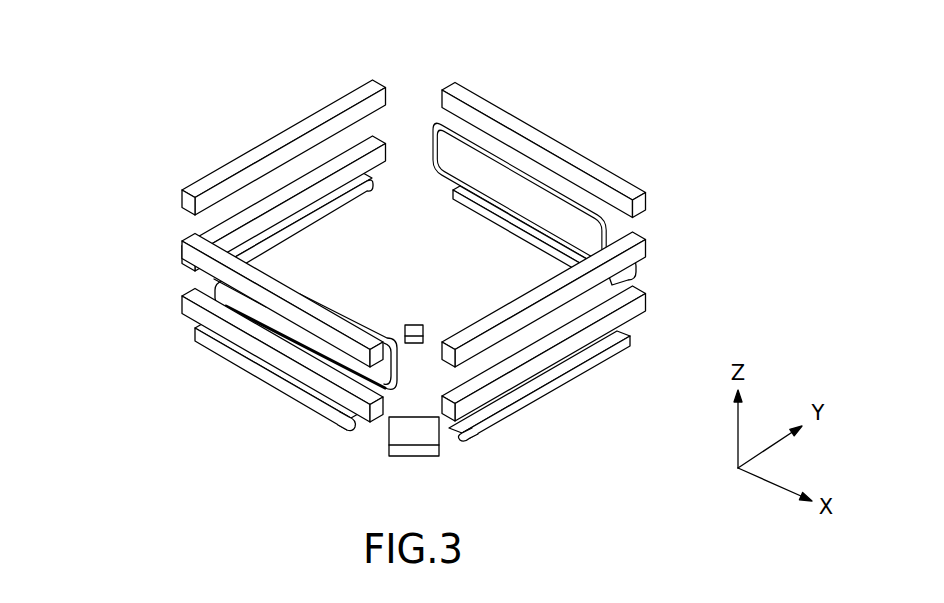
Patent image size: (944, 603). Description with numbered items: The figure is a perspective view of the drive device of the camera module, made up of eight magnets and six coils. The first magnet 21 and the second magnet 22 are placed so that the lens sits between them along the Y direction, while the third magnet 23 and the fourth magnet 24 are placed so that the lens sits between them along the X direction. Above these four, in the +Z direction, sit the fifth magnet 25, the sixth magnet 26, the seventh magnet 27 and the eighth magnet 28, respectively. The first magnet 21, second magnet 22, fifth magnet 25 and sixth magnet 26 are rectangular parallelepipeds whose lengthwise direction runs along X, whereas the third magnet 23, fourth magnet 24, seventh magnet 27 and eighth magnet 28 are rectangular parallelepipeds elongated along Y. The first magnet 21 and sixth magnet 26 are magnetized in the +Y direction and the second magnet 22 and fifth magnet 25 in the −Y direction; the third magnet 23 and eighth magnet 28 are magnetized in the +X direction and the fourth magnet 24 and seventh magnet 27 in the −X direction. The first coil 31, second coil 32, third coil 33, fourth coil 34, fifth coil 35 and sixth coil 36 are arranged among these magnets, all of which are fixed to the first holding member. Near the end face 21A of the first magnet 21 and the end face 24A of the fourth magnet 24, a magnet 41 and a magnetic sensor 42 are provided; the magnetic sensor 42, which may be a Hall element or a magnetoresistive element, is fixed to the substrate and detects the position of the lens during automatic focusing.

The first magnet 21 is at (275, 358).
The end face of the first magnet 21A is at (350, 429).
The second magnet 22 is at (640, 223).
The third magnet 23 is at (212, 232).
The fourth magnet 24 is at (577, 345).
The end face of the fourth magnet 24A is at (462, 440).
The fifth magnet 25 is at (207, 266).
The sixth magnet 26 is at (530, 130).
The seventh magnet 27 is at (257, 157).
The eighth magnet 28 is at (614, 287).
The first coil 31 is at (218, 353).
The second coil 32 is at (488, 210).
The third coil 33 is at (313, 218).
The fourth coil 34 is at (537, 393).
The fifth coil 35 is at (380, 330).
The sixth coil 36 is at (460, 133).
The magnet 41 is at (416, 325).
The magnetic sensor 42 is at (418, 436).